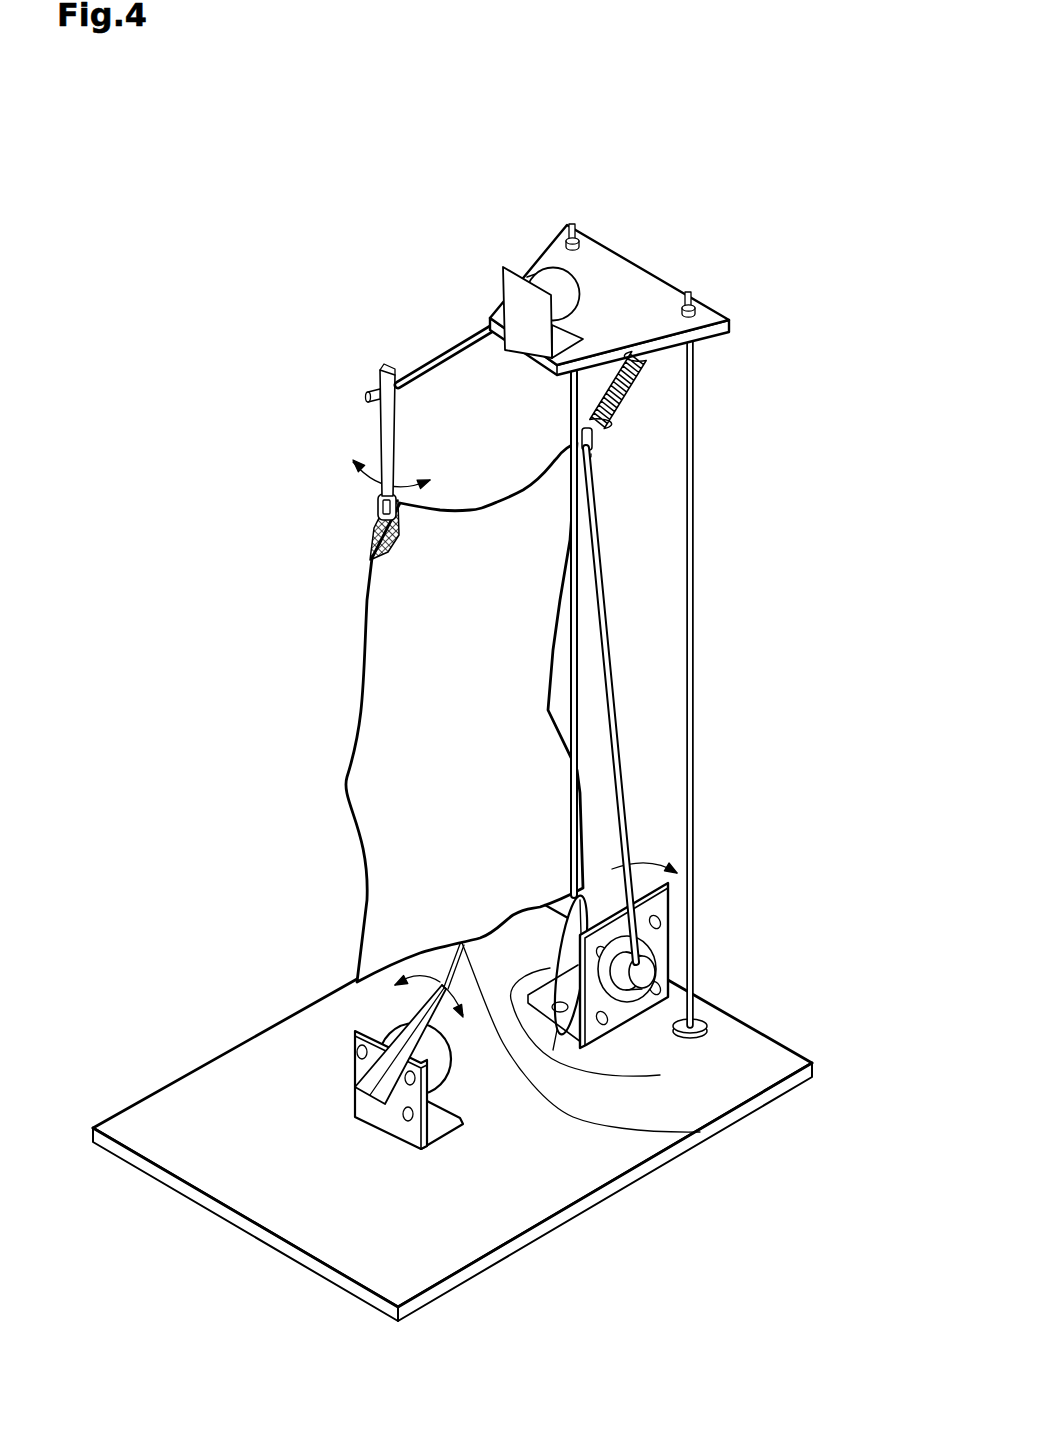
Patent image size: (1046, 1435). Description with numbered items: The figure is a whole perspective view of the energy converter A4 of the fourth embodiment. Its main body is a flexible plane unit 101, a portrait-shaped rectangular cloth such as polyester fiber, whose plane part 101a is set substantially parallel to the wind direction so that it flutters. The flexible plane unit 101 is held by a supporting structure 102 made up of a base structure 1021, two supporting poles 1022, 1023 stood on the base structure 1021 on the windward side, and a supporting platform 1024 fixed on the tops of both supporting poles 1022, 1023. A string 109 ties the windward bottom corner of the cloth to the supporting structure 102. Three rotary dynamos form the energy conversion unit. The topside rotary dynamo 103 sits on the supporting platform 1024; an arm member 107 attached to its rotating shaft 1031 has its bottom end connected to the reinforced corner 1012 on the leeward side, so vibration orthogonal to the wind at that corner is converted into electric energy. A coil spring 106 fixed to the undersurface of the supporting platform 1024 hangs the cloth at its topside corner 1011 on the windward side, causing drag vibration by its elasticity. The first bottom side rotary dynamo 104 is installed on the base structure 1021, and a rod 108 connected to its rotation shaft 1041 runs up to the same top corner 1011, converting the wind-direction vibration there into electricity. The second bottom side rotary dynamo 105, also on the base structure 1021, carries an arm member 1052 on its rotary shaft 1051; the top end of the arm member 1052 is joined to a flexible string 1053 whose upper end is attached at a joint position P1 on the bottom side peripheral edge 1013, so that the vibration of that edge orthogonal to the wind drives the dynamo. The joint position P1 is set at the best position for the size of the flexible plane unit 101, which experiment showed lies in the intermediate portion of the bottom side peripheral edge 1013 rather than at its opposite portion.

The flexible plane unit 101 is at (348, 722).
The plane part 101a is at (430, 637).
The topside corner on the windward side 1011 is at (577, 440).
The reinforced corner on the leeward side 1012 is at (372, 530).
The bottom side peripheral edge 1013 is at (598, 896).
The supporting structure 102 is at (618, 1210).
The base structure 1021 is at (240, 1198).
The supporting pole 1022 is at (578, 507).
The supporting pole 1023 is at (693, 583).
The supporting platform 1024 is at (640, 262).
The topside rotary dynamo 103 is at (575, 268).
The rotating shaft 1031 is at (480, 420).
The first bottom side rotary dynamo 104 is at (610, 892).
The rotation shaft 1041 is at (650, 974).
The second bottom side rotary dynamo 105 is at (458, 1070).
The rotary shaft 1051 is at (355, 1093).
The arm member 1052 is at (402, 1040).
The flexible string 1053 is at (450, 945).
The coil spring 106 is at (627, 388).
The arm member 107 is at (374, 403).
The rod 108 is at (612, 690).
The string 109 is at (660, 1075).
The energy converter A4 is at (410, 212).
The joint position P1 is at (470, 935).